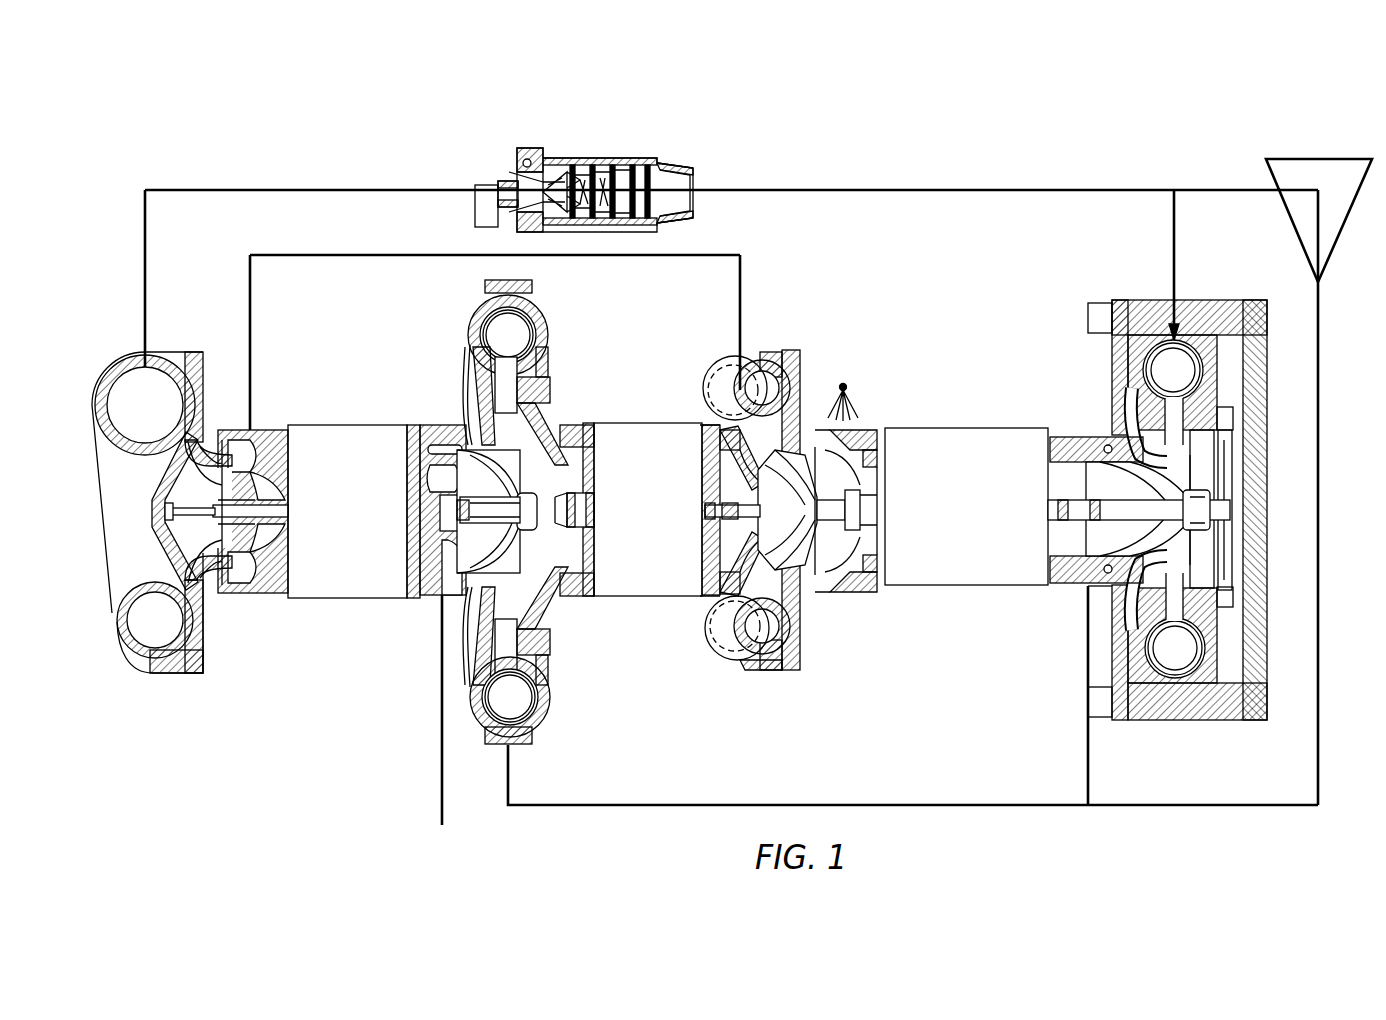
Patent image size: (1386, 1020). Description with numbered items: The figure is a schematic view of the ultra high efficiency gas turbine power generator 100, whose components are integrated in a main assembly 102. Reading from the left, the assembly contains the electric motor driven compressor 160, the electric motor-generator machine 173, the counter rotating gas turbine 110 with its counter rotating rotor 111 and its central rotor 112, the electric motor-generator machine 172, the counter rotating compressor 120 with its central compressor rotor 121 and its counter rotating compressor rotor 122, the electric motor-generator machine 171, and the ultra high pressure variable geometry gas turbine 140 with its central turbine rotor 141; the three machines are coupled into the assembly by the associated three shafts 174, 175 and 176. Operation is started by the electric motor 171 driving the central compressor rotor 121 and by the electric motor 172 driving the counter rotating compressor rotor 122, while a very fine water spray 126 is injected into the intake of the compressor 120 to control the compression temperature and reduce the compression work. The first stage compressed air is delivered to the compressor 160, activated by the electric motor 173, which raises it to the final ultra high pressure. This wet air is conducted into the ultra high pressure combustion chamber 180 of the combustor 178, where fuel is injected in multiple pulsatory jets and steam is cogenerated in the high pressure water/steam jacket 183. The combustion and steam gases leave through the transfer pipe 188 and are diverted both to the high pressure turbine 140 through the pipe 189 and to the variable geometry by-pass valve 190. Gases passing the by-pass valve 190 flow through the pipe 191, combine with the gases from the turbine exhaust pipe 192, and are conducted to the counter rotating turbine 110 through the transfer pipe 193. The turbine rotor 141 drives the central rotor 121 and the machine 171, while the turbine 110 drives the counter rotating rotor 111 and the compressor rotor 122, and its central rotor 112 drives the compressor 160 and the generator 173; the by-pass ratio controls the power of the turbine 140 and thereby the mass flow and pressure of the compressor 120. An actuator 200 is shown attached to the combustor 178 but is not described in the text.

The gas turbine power generator 100 is at (1128, 162).
The main assembly 102 is at (175, 677).
The counter rotating gas turbine 110 is at (542, 707).
The counter rotating rotor 111 is at (523, 576).
The central rotor of the gas turbine 112 is at (490, 554).
The counter rotating compressor 120 is at (795, 658).
The central compressor rotor 121 is at (800, 577).
The counter rotating compressor rotor 122 is at (762, 543).
The water spray 126 is at (843, 387).
The ultra high pressure variable geometry gas turbine 140 is at (1258, 660).
The central turbine rotor 141 is at (1162, 549).
The electric motor driven compressor 160 is at (195, 657).
The electric motor-generator machine 171 is at (965, 438).
The electric motor-generator machine 172 is at (635, 425).
The electric motor-generator machine 173 is at (343, 433).
The shaft 174 is at (842, 505).
The shaft 175 is at (594, 494).
The shaft 176 is at (493, 503).
The ultra high pressure combustor 178 is at (573, 158).
The ultra high pressure combustion chamber 180 is at (637, 178).
The high pressure water/steam jacket 183 is at (597, 162).
The transfer pipe 188 is at (915, 190).
The pipe 189 is at (1174, 257).
The variable geometry by-pass valve 190 is at (1303, 168).
The pipe 191 is at (1321, 388).
The turbine exhaust pipe 192 is at (1092, 742).
The transfer pipe 193 is at (862, 803).
The actuator 200 is at (480, 187).